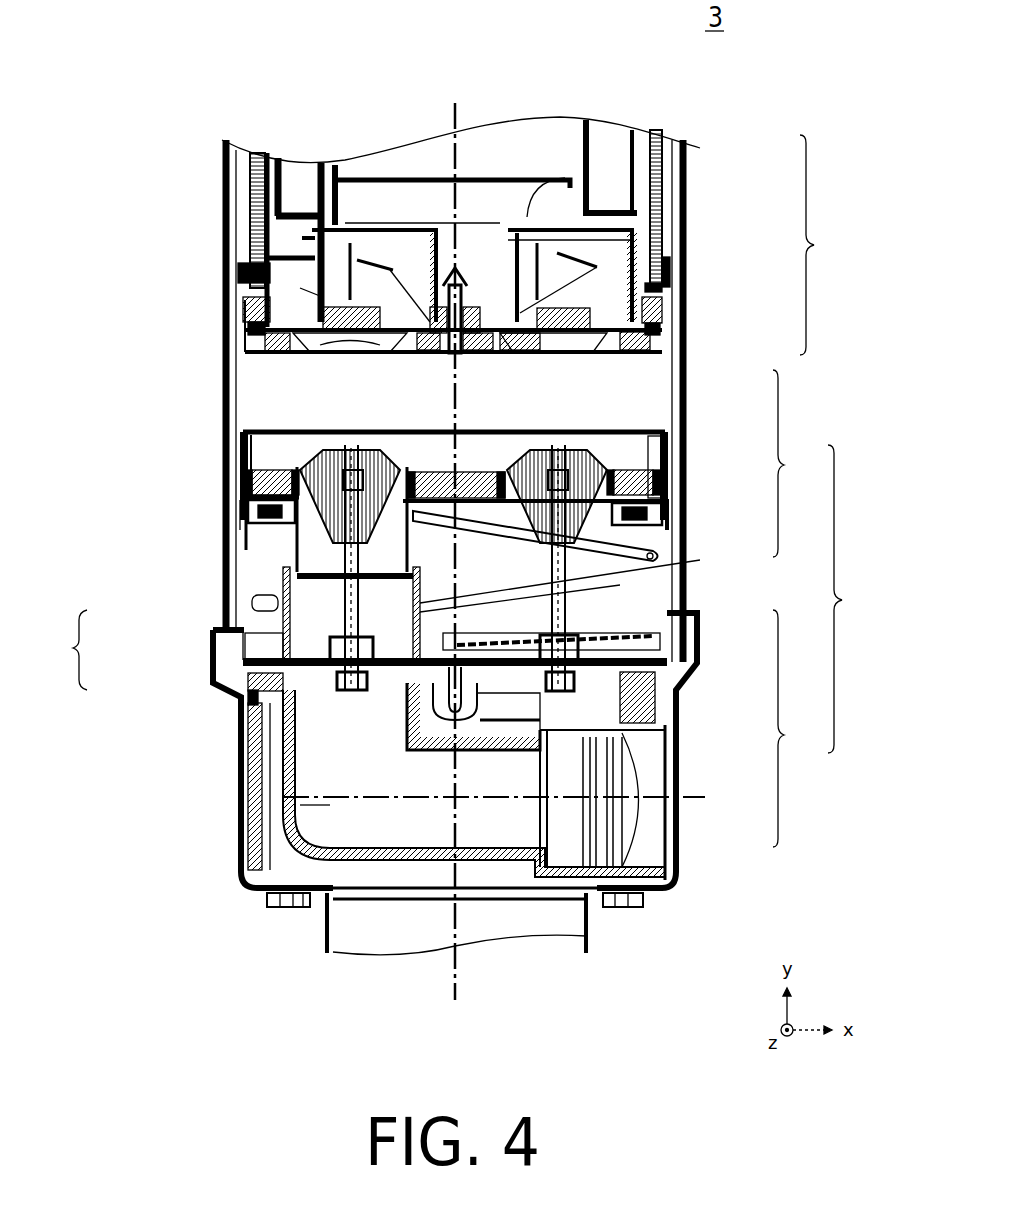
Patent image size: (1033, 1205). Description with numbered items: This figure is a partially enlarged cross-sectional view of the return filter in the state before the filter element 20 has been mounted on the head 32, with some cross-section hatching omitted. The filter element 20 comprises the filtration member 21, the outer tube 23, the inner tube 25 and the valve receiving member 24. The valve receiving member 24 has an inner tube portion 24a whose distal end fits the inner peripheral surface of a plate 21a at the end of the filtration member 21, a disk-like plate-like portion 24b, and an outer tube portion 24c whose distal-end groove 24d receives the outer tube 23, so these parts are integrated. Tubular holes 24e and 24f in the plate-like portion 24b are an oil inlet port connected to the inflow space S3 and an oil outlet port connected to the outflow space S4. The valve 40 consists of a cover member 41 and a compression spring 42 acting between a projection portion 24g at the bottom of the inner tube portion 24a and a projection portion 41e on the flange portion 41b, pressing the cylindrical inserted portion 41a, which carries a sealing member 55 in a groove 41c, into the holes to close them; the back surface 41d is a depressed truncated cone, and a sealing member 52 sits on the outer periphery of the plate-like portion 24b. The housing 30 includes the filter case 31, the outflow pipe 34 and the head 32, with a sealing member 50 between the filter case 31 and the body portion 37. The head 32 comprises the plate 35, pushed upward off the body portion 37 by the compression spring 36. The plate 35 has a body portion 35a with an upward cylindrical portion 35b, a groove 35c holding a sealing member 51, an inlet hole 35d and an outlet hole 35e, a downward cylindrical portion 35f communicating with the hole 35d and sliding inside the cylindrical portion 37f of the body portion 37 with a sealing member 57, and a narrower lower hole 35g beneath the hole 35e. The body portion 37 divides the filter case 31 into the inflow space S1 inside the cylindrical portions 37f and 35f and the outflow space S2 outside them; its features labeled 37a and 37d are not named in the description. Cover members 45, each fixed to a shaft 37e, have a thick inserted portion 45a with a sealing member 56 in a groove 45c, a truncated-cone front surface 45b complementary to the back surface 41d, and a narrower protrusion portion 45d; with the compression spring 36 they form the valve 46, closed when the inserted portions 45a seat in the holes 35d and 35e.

The filter element 20 is at (172, 90).
The filtration member 21 is at (305, 183).
The plate 21a is at (270, 157).
The outer tube 23 is at (252, 160).
The inner tube 25 is at (325, 163).
The inflow space S3 is at (283, 230).
The outflow space S4 is at (473, 197).
The valve receiving member 24 is at (822, 245).
The inner tube portion 24a is at (440, 232).
The plate-like portion 24b is at (647, 342).
The outer tube portion 24c is at (656, 316).
The groove 24d is at (662, 282).
The hole 24e is at (520, 275).
The hole 24f is at (630, 240).
The projection portion 24g is at (590, 176).
The valve 40 is at (124, 267).
The cover member 41 is at (140, 298).
The inserted portion 41a is at (340, 353).
The flange portion 41b is at (270, 340).
The groove 41c is at (330, 335).
The back surface 41d is at (300, 362).
The projection portion 41e is at (255, 318).
The compression spring 42 is at (300, 288).
The sealing member 55 is at (472, 355).
The sealing member 52 is at (470, 357).
The plate 35 is at (796, 463).
The body portion 35a is at (625, 483).
The cylindrical portion 35b is at (640, 452).
The groove 35c is at (666, 507).
The hole 35d is at (560, 428).
The hole 35e is at (645, 440).
The cylindrical portion 35f is at (613, 538).
The hole 35g is at (660, 514).
The compression spring 36 is at (660, 555).
The cover member 45 is at (140, 440).
The inserted portion 45a is at (252, 510).
The front surface 45b is at (258, 480).
The groove 45c is at (265, 520).
The protrusion portion 45d is at (242, 440).
The valve 46 is at (164, 650).
The sealing member 51 is at (278, 523).
The sealing member 56 is at (290, 545).
The sealing member 57 is at (440, 580).
The head 32 is at (561, 599).
The body portion 37 is at (519, 749).
The sleeve 37a is at (648, 735).
The bottom wall 37d is at (620, 853).
The shaft 37e is at (480, 592).
The cylindrical portion 37f is at (683, 673).
The sealing member 50 is at (233, 727).
The inflow space S1 is at (330, 793).
The outflow space S2 is at (300, 673).
The housing 30 is at (808, 852).
The filter case 31 is at (672, 873).
The outflow pipe 34 is at (585, 935).